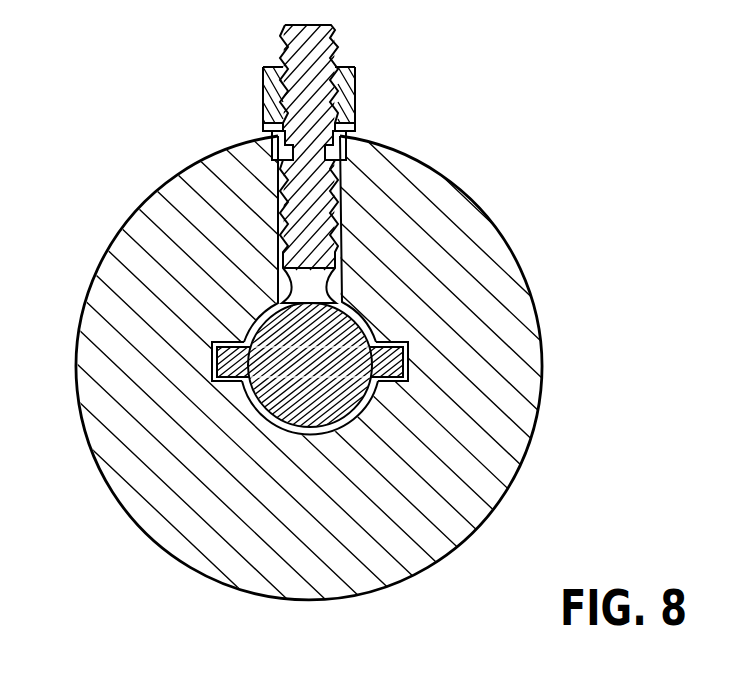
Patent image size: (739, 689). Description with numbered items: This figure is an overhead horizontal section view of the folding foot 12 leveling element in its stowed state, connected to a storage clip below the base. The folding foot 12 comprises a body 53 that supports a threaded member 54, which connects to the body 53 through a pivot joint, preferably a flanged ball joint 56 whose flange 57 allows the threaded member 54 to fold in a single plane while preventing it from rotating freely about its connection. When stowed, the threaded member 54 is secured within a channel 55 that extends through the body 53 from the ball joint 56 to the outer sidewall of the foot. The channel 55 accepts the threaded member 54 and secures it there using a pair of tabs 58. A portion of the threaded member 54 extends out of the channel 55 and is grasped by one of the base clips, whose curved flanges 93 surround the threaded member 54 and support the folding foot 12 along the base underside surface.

The folding foot 12 is at (613, 199).
The body 53 is at (530, 282).
The threaded member 54 is at (333, 37).
The channel 55 is at (279, 191).
The ball joint 56 is at (347, 392).
The flange 57 is at (226, 356).
The tabs 58 is at (287, 156).
The curved flanges 93 is at (263, 90).